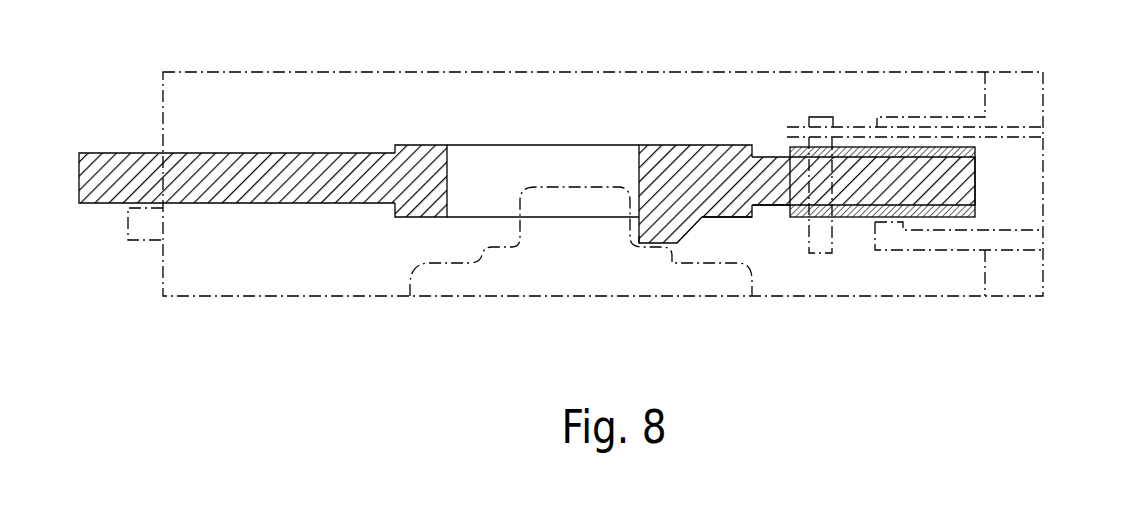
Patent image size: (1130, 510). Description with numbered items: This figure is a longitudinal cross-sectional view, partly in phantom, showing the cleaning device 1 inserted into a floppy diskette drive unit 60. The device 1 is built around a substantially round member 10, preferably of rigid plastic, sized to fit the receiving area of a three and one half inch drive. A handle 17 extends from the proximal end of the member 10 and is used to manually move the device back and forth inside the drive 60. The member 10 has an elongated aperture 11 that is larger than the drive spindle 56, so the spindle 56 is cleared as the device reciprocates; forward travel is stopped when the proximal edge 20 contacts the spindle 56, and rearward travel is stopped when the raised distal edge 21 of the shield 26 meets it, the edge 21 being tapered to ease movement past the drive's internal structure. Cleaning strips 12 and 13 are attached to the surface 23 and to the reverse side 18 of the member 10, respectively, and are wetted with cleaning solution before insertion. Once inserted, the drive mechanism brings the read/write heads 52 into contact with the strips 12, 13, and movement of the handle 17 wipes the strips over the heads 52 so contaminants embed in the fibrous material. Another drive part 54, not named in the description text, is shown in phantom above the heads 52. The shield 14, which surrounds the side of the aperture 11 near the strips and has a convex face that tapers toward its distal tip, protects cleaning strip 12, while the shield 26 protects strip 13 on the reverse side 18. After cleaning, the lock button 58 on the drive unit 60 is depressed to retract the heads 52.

The device 1 is at (283, 148).
The member 10 is at (975, 173).
The elongated aperture 11 is at (550, 174).
The cleaning strip 12 is at (848, 146).
The cleaning strip 13 is at (840, 218).
The shield 14 is at (682, 145).
The handle 17 is at (128, 152).
The reverse side 18 is at (766, 206).
The proximal edge 20 is at (451, 165).
The raised distal edge 21 is at (632, 230).
The surface 23 is at (762, 157).
The shield 26 is at (708, 218).
The read/write heads 52 is at (1043, 242).
The clamp 54 is at (820, 115).
The drive spindle 56 is at (662, 288).
The lock button 58 is at (140, 242).
The floppy diskette drive unit 60 is at (312, 72).